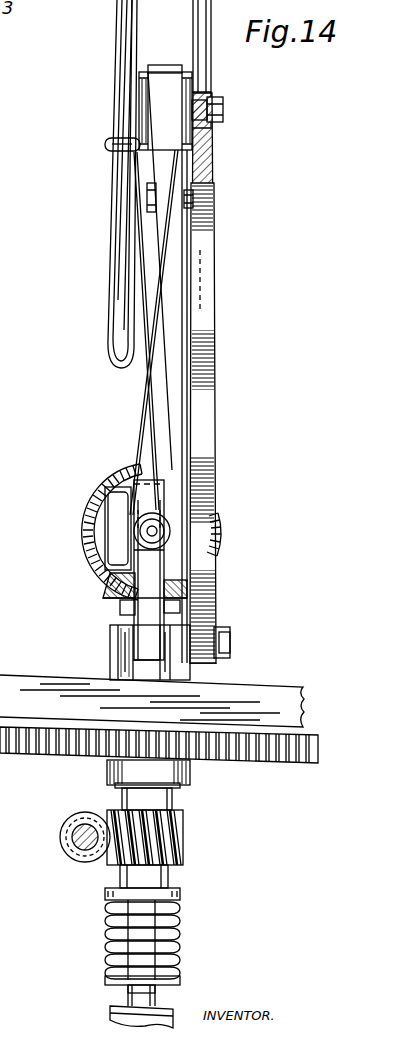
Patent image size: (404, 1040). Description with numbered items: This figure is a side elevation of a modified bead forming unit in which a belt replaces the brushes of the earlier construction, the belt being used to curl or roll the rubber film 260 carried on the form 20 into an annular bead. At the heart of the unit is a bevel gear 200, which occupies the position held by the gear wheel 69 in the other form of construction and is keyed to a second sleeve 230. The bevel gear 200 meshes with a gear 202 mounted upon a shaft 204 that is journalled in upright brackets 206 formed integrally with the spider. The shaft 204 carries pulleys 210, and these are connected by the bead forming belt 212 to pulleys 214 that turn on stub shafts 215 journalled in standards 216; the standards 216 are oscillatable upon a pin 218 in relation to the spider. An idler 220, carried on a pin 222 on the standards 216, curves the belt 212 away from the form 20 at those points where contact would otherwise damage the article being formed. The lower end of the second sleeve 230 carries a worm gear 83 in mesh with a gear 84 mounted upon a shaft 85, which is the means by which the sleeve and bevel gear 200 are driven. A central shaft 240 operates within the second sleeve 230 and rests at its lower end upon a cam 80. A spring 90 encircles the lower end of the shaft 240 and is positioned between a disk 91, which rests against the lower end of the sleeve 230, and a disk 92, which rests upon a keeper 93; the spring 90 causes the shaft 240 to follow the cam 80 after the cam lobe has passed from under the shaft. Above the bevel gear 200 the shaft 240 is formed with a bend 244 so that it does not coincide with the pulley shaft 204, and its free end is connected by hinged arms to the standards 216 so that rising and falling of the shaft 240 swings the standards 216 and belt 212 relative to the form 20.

The form 20 is at (124, 25).
The gear wheel 69 is at (42, 757).
The cam 80 is at (109, 1014).
The worm gear 83 is at (185, 846).
The gear 84 is at (68, 852).
The shaft 85 is at (72, 834).
The spring 90 is at (182, 931).
The disk 91 is at (182, 895).
The disk 92 is at (182, 985).
The keeper 93 is at (126, 989).
The bevel gear 200 is at (112, 598).
The gear 202 is at (96, 555).
The shaft 204 is at (160, 527).
The upright brackets 206 is at (160, 560).
The pulleys 210 is at (166, 517).
The bead forming belt 212 is at (168, 252).
The pulleys 214 is at (190, 88).
The stub shafts 215 is at (224, 110).
The standards 216 is at (214, 352).
The pin 218 is at (232, 640).
The idler 220 is at (147, 212).
The pin 222 is at (203, 193).
The second sleeve 230 is at (174, 806).
The central shaft 240 is at (148, 1000).
The bend 244 is at (115, 535).
The rubber film 260 is at (114, 152).